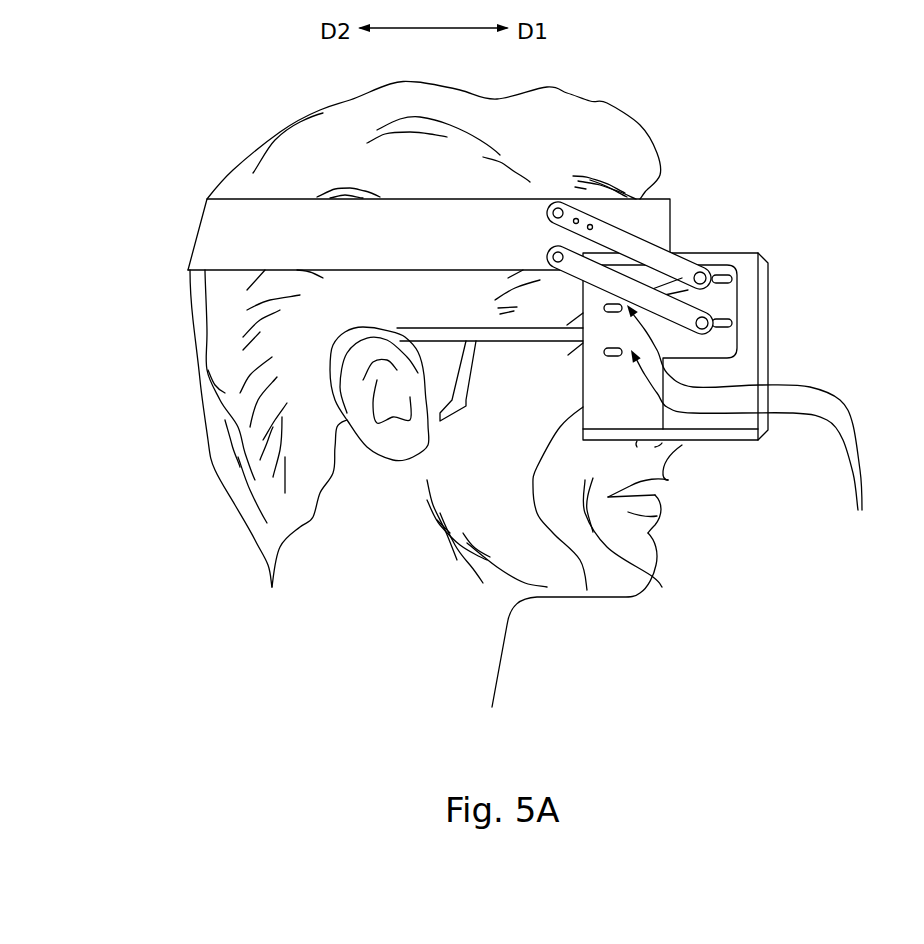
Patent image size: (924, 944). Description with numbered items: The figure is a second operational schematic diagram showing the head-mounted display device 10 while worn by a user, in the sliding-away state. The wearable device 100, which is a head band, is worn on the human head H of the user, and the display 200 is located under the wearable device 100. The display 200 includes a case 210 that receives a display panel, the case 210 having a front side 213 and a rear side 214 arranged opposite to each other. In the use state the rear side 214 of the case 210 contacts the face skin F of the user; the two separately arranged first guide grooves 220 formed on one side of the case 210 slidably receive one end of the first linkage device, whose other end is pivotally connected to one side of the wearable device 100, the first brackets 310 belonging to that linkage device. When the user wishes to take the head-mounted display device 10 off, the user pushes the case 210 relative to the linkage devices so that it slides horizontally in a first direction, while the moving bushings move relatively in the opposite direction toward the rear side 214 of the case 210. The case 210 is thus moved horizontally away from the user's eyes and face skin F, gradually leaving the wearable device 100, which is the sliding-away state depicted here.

The head-mounted display device 10 is at (498, 369).
The wearable device 100 is at (205, 237).
The display 200 is at (711, 463).
The case 210 is at (703, 463).
The front side 213 is at (770, 345).
The rear side 214 is at (587, 590).
The first guide grooves 220 is at (743, 528).
The first brackets 310 is at (640, 290).
The human head H is at (620, 127).
The face skin F is at (662, 587).